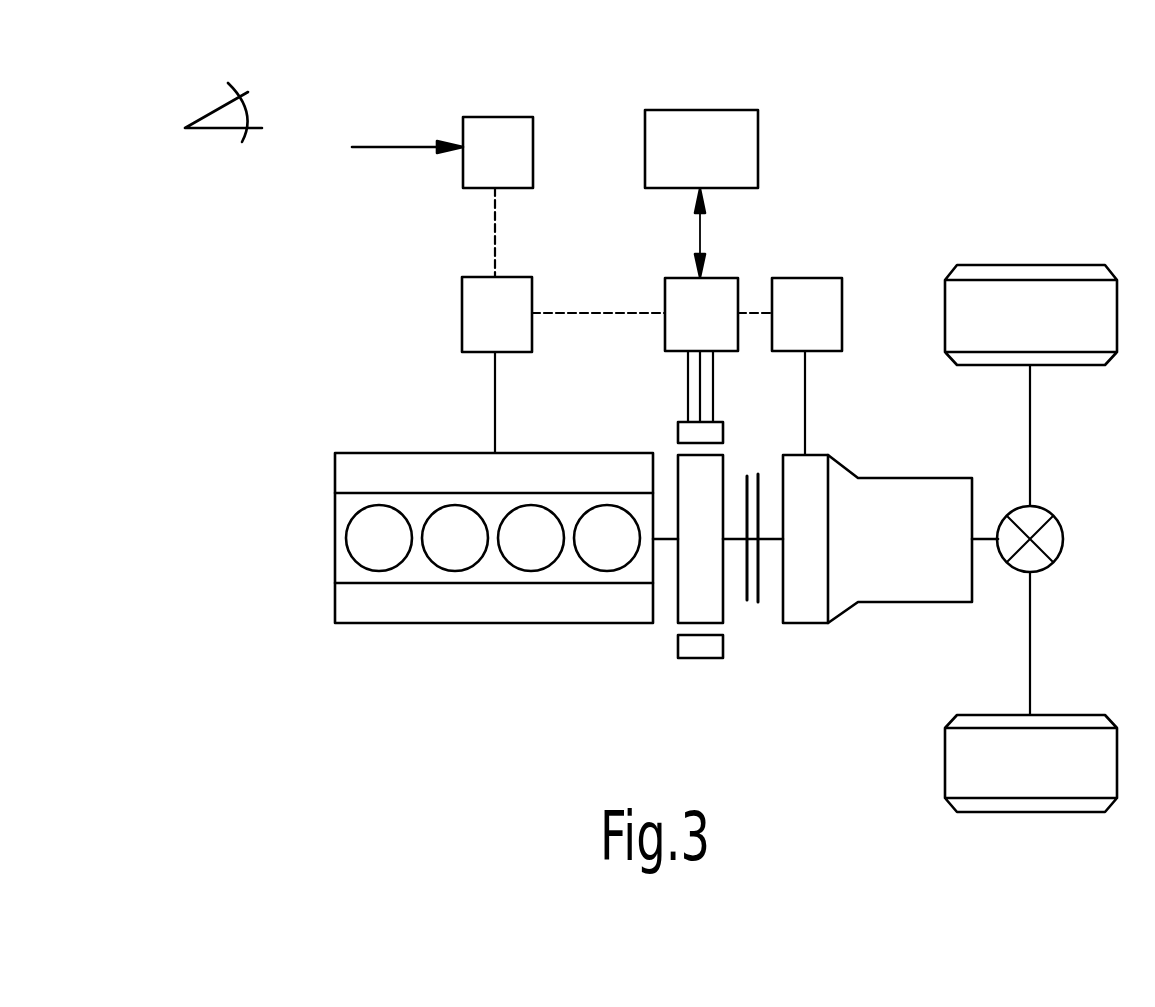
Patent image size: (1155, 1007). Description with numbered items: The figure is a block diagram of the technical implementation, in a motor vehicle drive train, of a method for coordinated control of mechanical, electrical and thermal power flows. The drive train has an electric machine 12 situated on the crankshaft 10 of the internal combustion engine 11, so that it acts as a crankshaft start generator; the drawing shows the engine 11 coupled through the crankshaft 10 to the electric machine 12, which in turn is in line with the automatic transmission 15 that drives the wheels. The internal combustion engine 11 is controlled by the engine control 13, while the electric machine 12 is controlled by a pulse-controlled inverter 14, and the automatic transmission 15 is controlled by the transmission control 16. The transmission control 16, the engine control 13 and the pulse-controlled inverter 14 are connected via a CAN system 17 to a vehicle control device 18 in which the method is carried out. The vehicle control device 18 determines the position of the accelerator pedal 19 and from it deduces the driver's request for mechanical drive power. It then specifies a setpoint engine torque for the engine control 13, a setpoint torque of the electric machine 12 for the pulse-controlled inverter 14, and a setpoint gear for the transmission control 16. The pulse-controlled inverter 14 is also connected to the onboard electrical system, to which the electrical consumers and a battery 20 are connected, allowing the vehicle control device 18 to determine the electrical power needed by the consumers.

The crankshaft 10 is at (670, 543).
The internal combustion engine 11 is at (343, 575).
The electric machine 12 is at (705, 600).
The engine control 13 is at (462, 320).
The pulse-controlled inverter 14 is at (723, 287).
The automatic transmission 15 is at (910, 508).
The transmission control 16 is at (828, 293).
The CAN system 17 is at (612, 313).
The vehicle control device 18 is at (518, 125).
The accelerator pedal 19 is at (255, 99).
The battery 20 is at (748, 128).